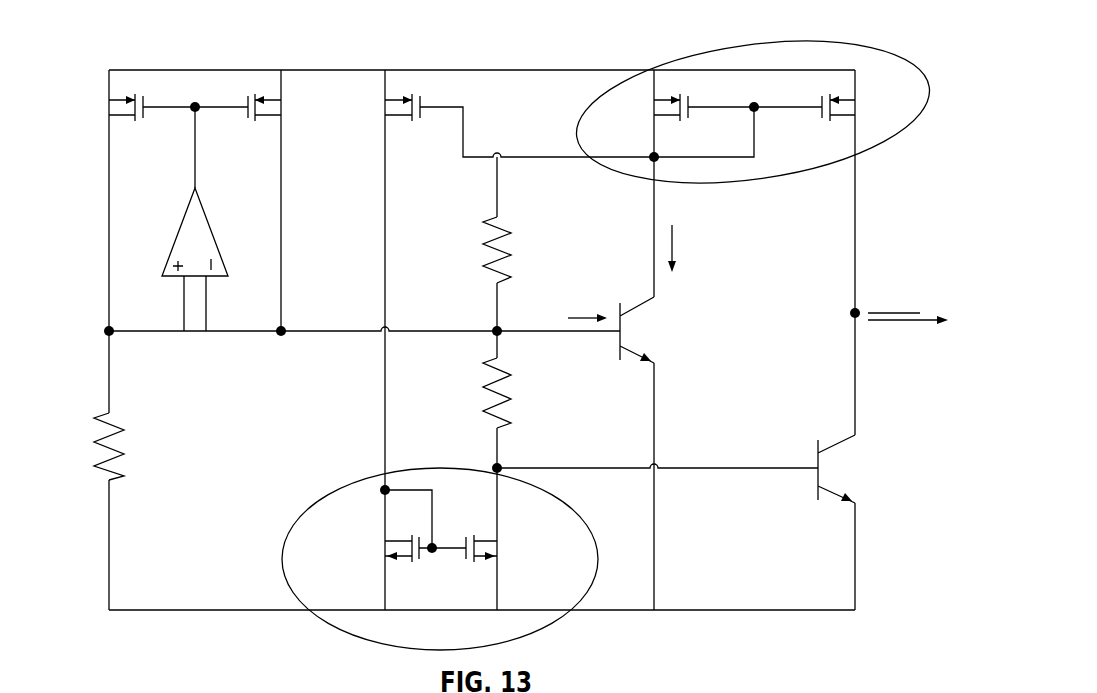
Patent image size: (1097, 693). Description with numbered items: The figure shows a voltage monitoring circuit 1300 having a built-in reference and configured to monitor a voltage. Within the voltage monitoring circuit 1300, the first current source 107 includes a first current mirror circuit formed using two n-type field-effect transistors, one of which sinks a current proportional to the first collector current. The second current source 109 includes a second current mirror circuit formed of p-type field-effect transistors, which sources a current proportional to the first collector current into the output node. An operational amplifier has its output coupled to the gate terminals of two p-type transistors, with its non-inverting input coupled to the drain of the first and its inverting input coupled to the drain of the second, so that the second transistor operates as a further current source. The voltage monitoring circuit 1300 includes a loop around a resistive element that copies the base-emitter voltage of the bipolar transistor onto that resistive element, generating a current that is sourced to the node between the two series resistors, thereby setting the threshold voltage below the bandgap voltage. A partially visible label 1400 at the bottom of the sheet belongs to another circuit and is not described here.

The voltage monitoring circuit 1300 is at (153, 22).
The second current source 109 is at (843, 40).
The first current source 107 is at (407, 467).
The circuit of next figure 1400 is at (140, 692).